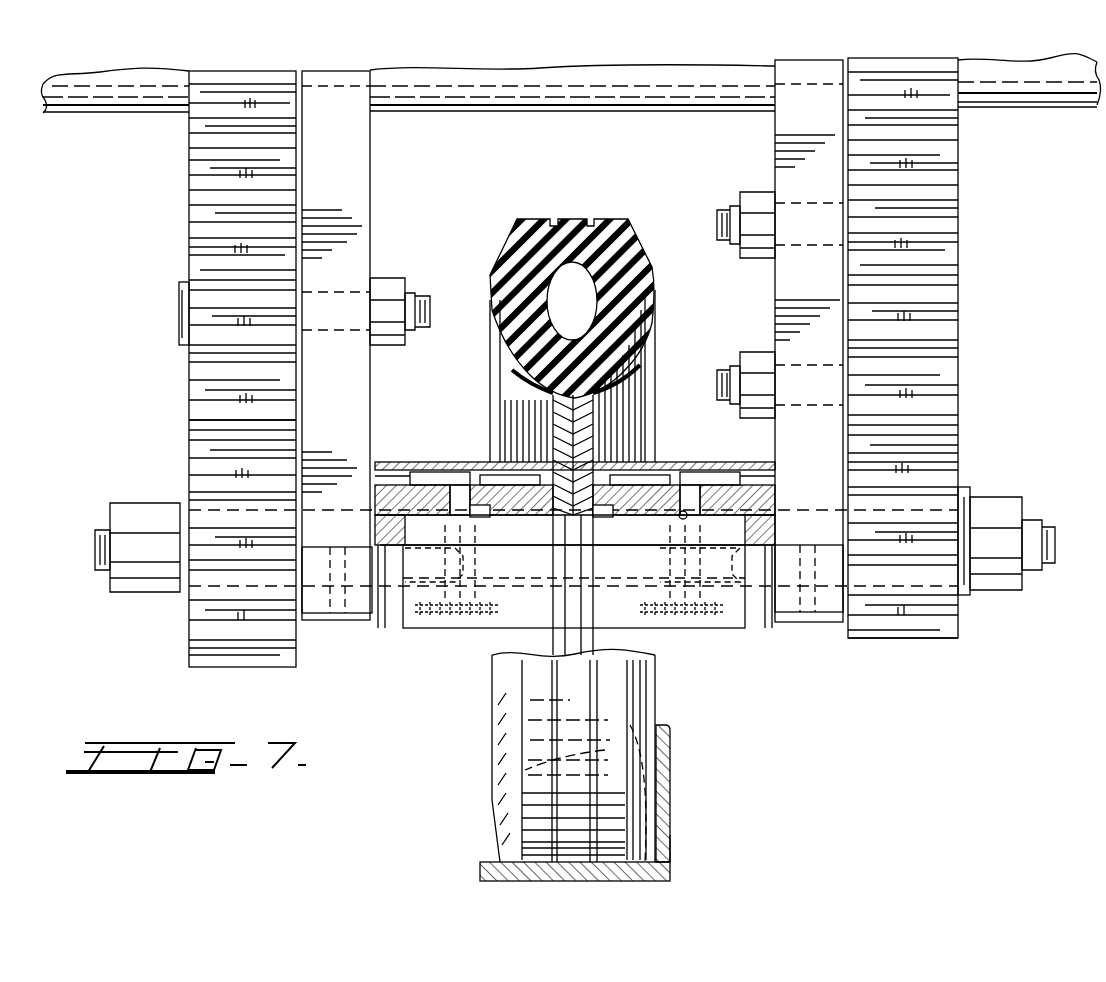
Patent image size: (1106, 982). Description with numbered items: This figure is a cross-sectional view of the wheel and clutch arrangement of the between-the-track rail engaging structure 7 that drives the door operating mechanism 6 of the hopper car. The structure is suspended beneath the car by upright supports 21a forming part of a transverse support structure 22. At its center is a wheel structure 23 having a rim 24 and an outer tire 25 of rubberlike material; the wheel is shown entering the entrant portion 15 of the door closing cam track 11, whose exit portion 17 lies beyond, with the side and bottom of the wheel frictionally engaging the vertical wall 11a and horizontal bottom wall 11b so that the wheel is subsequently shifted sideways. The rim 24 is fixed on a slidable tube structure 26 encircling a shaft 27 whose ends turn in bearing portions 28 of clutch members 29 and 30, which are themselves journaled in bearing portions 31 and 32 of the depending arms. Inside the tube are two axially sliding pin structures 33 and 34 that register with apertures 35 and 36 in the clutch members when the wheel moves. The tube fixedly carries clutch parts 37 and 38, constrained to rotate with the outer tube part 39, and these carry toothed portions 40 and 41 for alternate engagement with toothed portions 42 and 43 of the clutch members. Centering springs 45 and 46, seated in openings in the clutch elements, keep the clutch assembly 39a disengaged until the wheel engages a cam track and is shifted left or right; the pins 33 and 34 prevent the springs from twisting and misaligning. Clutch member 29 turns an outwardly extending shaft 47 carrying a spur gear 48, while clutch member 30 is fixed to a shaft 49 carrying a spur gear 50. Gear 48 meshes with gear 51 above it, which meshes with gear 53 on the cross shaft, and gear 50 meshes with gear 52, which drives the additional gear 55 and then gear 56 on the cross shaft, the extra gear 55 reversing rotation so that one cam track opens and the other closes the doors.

The door operating mechanism 6 is at (880, 664).
The between-the-track rail engaging structure 7 is at (678, 699).
The door closing cam track 11 is at (643, 813).
The vertical wall 11a is at (670, 815).
The horizontal bottom wall 11b is at (640, 881).
The entrant portion 15 is at (670, 845).
The exit portion 17 is at (583, 793).
The upright supports 21a is at (370, 205).
The transverse support structure 22 is at (1016, 106).
The wheel structure 23 is at (480, 379).
The rim 24 is at (630, 378).
The outer tire 25 is at (638, 218).
The slidable tube structure 26 is at (390, 477).
The shaft 27 is at (482, 474).
The bearing portions 28 is at (380, 488).
The clutch member 29 is at (377, 476).
The clutch member 30 is at (746, 484).
The bearing portion 31 is at (325, 615).
The bearing portion 32 is at (818, 612).
The axially sliding pin structure 33 is at (402, 472).
The axially sliding pin structure 34 is at (692, 484).
The aperture 35 is at (392, 450).
The aperture 36 is at (778, 502).
The clutch part 37 is at (502, 453).
The clutch part 38 is at (652, 458).
The outer tube part 39 is at (474, 486).
The clutch assembly 39a is at (538, 460).
The toothed portion 40 is at (460, 515).
The toothed portion 41 is at (680, 515).
The toothed portion 42 is at (435, 485).
The toothed portion 43 is at (673, 468).
The centering spring 45 is at (438, 623).
The centering spring 46 is at (675, 620).
The shaft 47 is at (312, 508).
The spur gear 48 is at (189, 420).
The shaft 49 is at (802, 482).
The spur gear 50 is at (960, 598).
The gear 51 is at (186, 372).
The gear 52 is at (960, 454).
The gear 53 is at (188, 168).
The gear 55 is at (960, 322).
The gear 56 is at (960, 96).